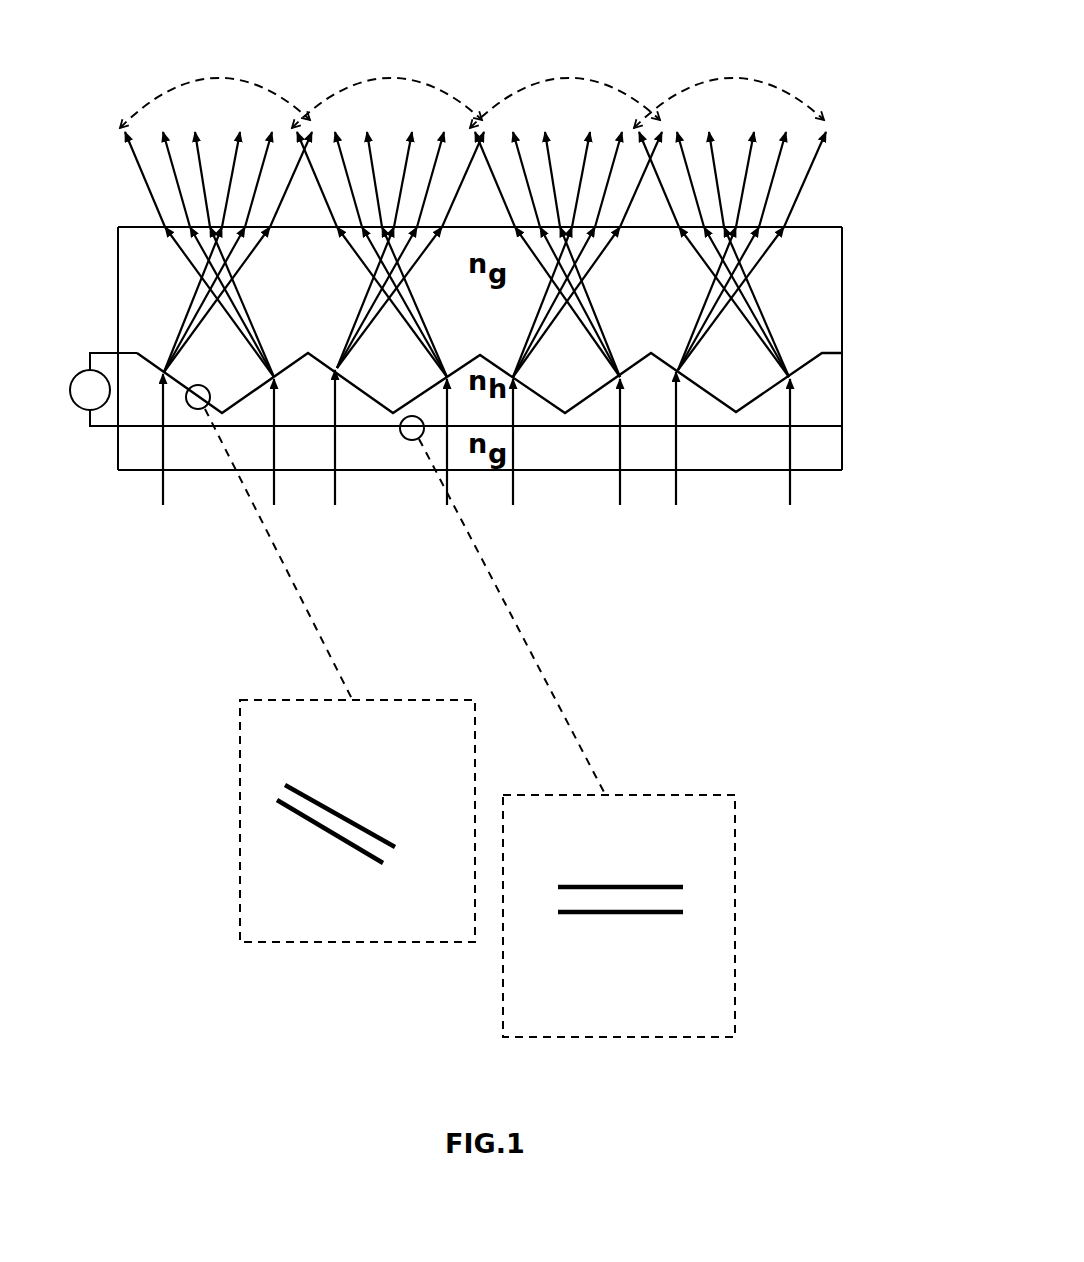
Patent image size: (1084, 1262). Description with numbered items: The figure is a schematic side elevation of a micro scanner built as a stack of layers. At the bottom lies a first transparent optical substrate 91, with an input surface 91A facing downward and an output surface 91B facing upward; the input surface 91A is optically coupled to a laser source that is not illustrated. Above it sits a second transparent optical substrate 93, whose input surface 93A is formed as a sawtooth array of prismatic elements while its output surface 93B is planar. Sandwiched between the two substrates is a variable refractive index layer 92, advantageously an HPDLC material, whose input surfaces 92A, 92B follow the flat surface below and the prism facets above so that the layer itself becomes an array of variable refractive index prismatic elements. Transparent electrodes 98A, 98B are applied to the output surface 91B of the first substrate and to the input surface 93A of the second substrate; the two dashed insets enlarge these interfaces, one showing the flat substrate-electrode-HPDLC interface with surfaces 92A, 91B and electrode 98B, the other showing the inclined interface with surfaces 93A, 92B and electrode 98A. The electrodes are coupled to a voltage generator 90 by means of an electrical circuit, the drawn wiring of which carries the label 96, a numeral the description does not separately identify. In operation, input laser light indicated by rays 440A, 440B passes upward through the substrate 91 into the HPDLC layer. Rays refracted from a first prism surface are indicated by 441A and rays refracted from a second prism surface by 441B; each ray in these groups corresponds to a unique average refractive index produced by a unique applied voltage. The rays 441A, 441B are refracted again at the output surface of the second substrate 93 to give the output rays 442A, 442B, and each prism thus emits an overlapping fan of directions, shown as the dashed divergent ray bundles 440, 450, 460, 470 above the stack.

The voltage generator 90 is at (77, 408).
The electrode wiring 96 is at (105, 352).
The first transparent optical substrate 91 is at (842, 445).
The input surface 91A is at (842, 470).
The output surface 91B is at (680, 913).
The variable refractive index layer 92 is at (842, 388).
The input surface 92A is at (562, 885).
The input surface 92B is at (377, 865).
The second transparent optical substrate 93 is at (842, 310).
The input surface 93A is at (295, 787).
The output surface 93B is at (845, 227).
The transparent electrode 98A is at (340, 828).
The transparent electrode 98B is at (597, 900).
The divergent ray bundle 440 is at (730, 78).
The divergent ray bundle 450 is at (545, 77).
The divergent ray bundle 460 is at (375, 77).
The divergent ray bundle 470 is at (203, 77).
The input laser light ray 440A is at (793, 450).
The input laser light ray 440B is at (680, 450).
The refracted rays 441A is at (743, 260).
The refracted rays 441B is at (697, 253).
The output rays 442A is at (707, 180).
The output rays 442B is at (800, 150).